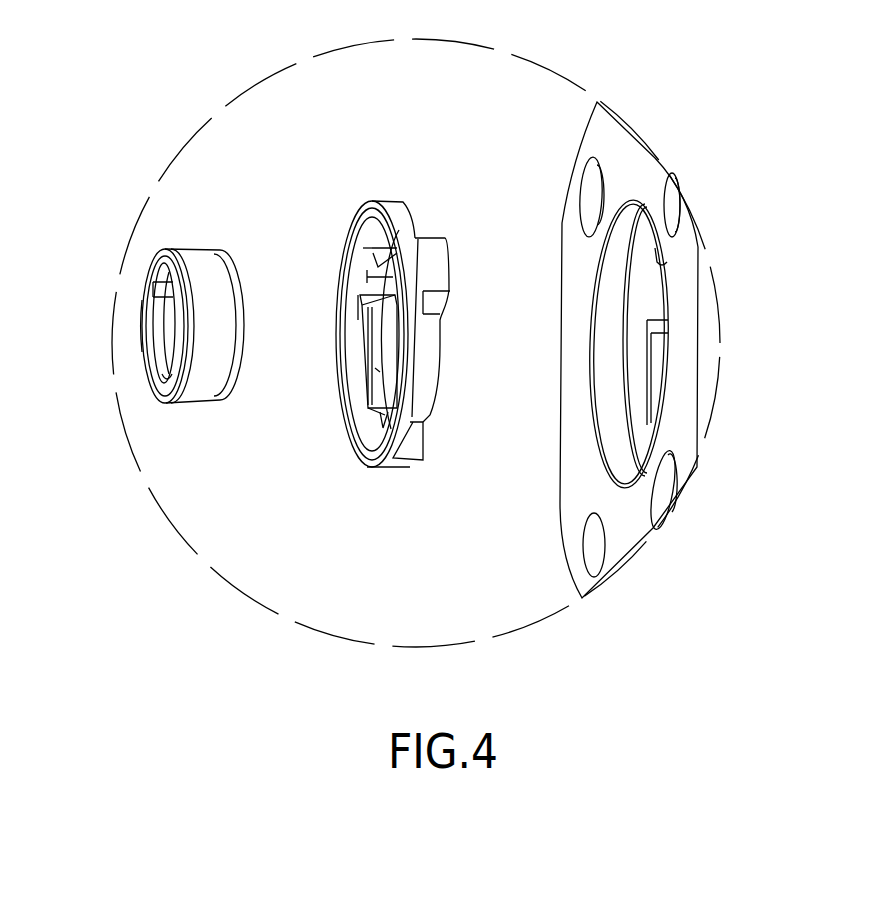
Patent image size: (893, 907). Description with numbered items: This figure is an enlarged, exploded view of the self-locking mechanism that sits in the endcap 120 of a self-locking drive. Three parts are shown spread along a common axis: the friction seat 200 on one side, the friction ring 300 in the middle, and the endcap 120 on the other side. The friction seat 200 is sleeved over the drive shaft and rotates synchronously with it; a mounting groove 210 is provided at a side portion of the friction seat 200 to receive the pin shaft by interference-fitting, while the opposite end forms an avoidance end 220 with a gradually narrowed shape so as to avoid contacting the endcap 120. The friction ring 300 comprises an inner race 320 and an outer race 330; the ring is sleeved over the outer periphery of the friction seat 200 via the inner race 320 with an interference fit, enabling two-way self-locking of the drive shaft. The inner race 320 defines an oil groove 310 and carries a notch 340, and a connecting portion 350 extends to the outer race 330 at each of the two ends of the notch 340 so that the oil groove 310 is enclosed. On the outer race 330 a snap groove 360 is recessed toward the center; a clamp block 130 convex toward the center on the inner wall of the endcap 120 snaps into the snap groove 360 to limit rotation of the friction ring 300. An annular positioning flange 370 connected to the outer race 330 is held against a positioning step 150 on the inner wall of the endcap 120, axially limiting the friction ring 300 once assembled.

The endcap 120 is at (688, 267).
The clamp block 130 is at (663, 400).
The positioning step 150 is at (627, 381).
The friction seat 200 is at (203, 262).
The mounting groove 210 is at (160, 333).
The avoidance end 220 is at (228, 362).
The friction ring 300 is at (398, 235).
The oil groove 310 is at (372, 294).
The inner race 320 is at (368, 330).
The outer race 330 is at (407, 465).
The notch 340 is at (427, 289).
The connecting portion 350 is at (377, 370).
The snap groove 360 is at (433, 383).
The positioning flange 370 is at (363, 248).